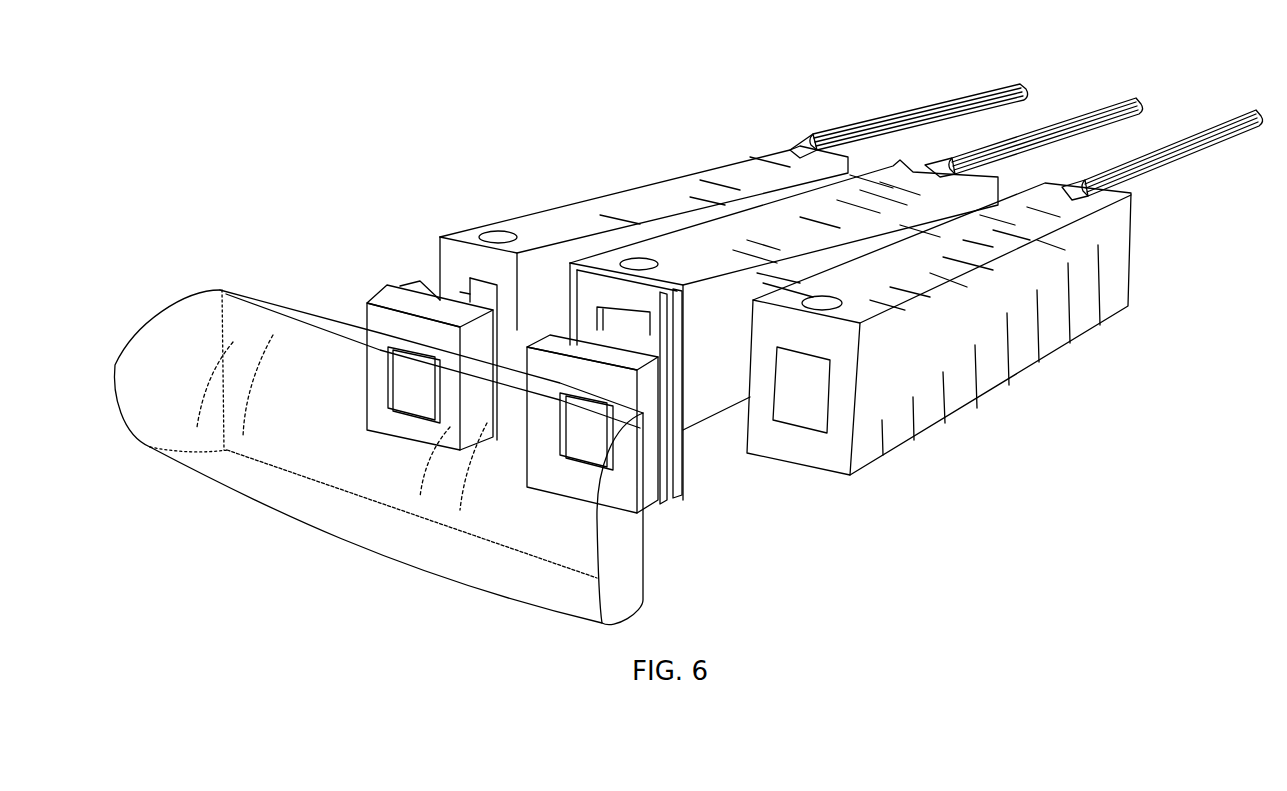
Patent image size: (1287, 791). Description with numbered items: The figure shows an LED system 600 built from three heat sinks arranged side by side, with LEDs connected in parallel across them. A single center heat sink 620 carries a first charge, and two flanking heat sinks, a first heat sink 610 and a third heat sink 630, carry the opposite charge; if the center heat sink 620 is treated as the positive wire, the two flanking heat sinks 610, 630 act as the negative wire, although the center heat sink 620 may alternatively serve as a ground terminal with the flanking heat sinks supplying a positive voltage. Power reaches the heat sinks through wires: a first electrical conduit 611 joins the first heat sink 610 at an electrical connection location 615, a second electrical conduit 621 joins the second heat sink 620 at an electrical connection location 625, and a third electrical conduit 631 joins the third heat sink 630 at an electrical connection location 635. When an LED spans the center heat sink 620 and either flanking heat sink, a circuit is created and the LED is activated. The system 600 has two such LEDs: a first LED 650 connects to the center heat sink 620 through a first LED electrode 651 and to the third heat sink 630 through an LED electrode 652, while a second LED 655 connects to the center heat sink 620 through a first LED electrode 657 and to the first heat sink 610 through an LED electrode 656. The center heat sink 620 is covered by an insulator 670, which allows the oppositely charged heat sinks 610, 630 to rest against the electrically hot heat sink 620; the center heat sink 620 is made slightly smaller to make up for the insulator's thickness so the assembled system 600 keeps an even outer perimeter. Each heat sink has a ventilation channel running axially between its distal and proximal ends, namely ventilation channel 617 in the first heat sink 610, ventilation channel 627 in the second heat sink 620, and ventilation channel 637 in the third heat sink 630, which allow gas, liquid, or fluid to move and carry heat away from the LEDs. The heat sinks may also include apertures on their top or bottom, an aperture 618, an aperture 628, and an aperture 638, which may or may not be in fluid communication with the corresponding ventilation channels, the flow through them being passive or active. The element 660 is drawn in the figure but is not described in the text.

The LED system 600 is at (236, 96).
The first heat sink 610 is at (642, 180).
The first electrical conduit 611 is at (935, 110).
The electrical connection location 615 is at (812, 140).
The ventilation channel 617 is at (445, 292).
The aperture 618 is at (495, 228).
The second heat sink 620 is at (642, 256).
The second electrical conduit 621 is at (1090, 112).
The electrical connection location 625 is at (953, 168).
The ventilation channel 627 is at (610, 322).
The aperture 628 is at (610, 306).
The third heat sink 630 is at (982, 380).
The third electrical conduit 631 is at (1240, 113).
The electrical connection location 635 is at (1088, 190).
The ventilation channel 637 is at (798, 394).
The aperture 638 is at (822, 296).
The first LED 650 is at (683, 380).
The first LED electrode 651 is at (552, 325).
The LED electrode 652 is at (682, 480).
The second LED 655 is at (372, 306).
The LED electrode 656 is at (392, 288).
The first LED electrode 657 is at (462, 283).
The cylindrical lens 660 is at (220, 290).
The insulator 670 is at (733, 230).